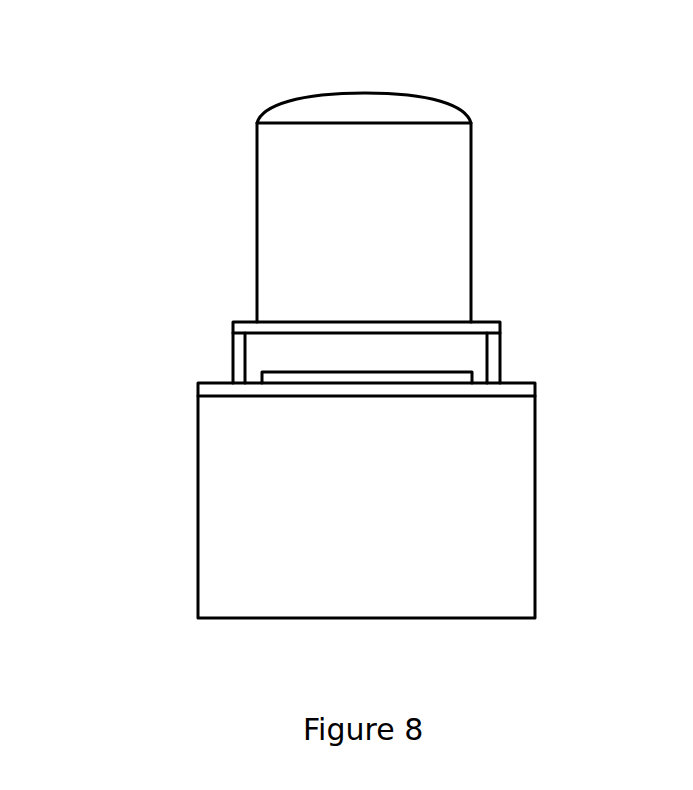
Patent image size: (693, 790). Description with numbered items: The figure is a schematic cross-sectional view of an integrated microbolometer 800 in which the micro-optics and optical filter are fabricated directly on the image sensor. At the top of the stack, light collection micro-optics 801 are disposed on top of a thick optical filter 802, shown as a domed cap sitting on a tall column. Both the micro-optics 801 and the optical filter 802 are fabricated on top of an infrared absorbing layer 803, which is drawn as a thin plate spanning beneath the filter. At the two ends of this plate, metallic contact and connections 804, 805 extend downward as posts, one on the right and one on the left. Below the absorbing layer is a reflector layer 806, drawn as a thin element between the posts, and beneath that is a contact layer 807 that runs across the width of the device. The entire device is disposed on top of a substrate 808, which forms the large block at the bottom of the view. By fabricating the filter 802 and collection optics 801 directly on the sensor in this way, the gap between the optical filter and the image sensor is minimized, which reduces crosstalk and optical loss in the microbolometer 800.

The microbolometer 800 is at (302, 72).
The light collection micro-optics 801 is at (458, 108).
The thick optical filter 802 is at (472, 157).
The infrared absorbing layer 803 is at (297, 320).
The metallic contact and connection 804 is at (500, 322).
The metallic contact and connection 805 is at (232, 360).
The reflector layer 806 is at (278, 372).
The contact layer 807 is at (535, 388).
The substrate 808 is at (198, 520).